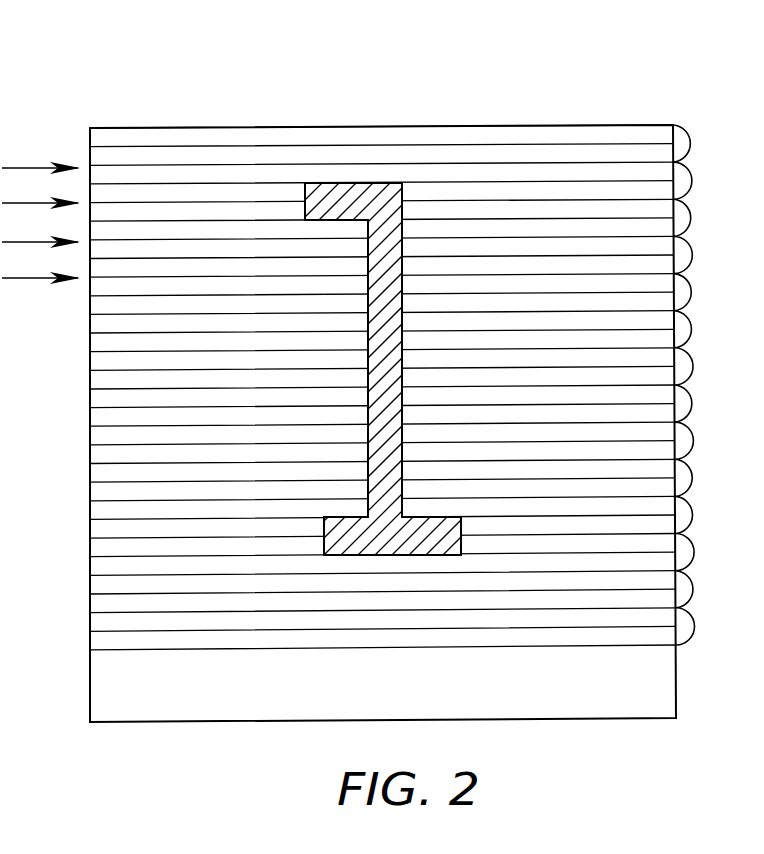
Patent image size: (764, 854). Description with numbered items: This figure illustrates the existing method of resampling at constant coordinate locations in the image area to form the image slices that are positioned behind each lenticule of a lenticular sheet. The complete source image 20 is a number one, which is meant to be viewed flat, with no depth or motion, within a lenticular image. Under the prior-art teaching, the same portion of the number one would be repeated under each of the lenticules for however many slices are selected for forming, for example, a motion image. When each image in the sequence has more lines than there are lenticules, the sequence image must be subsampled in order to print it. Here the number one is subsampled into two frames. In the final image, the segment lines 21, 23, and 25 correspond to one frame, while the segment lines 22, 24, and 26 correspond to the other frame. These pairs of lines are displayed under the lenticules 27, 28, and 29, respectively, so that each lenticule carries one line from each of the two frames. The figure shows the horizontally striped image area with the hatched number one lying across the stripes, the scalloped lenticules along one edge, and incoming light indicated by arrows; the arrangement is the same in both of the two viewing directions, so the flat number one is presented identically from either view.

The complete source image 20 is at (283, 102).
The segment line 21 is at (575, 190).
The segment line 22 is at (410, 215).
The segment line 23 is at (585, 225).
The segment line 24 is at (415, 253).
The segment line 25 is at (600, 267).
The segment line 26 is at (412, 287).
The lenticule 27 is at (692, 205).
The lenticule 28 is at (690, 250).
The lenticule 29 is at (692, 297).